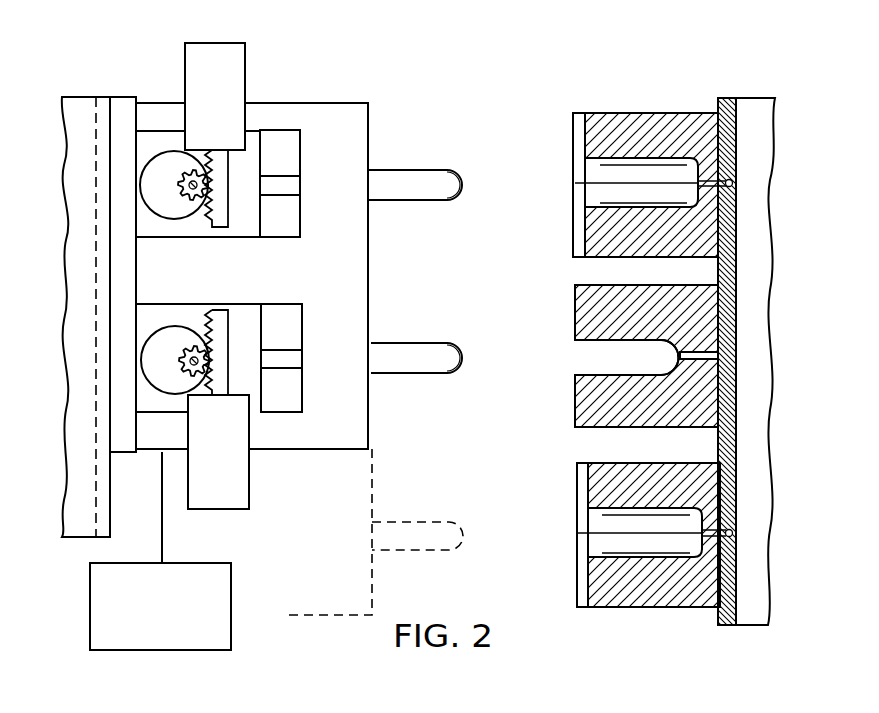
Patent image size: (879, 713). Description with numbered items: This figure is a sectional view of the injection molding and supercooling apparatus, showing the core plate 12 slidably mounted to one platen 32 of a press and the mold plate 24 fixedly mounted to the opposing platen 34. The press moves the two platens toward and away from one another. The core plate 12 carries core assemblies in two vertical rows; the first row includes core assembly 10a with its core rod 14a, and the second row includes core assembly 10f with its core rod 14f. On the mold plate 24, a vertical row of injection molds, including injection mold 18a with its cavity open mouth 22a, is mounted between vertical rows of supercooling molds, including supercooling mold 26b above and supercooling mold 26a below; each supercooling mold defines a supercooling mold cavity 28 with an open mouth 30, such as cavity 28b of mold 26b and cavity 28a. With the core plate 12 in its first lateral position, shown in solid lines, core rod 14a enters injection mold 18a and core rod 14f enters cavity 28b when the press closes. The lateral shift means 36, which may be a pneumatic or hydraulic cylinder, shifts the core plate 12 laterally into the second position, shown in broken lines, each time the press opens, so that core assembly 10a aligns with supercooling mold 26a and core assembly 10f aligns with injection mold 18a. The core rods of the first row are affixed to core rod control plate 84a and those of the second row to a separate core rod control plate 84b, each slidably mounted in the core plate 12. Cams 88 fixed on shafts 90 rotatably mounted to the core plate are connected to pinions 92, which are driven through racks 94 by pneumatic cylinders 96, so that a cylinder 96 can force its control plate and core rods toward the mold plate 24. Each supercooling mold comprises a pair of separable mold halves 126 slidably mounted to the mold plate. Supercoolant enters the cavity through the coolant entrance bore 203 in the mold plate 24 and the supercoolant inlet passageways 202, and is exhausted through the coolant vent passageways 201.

The platen 32 is at (80, 105).
The core plate 12 is at (338, 100).
The pneumatic cylinder 96 is at (201, 52).
The core rod control plate 84b is at (252, 140).
The core rod control plate 84a is at (247, 318).
The cam 88 is at (160, 192).
The pinion 92 is at (190, 173).
The shaft 90 is at (188, 172).
The rack 94 is at (218, 313).
The core assembly 10f is at (385, 168).
The core rod 14f is at (438, 168).
The core assembly 10a is at (382, 342).
The core rod 14a is at (450, 342).
The lateral shift means 36 is at (231, 588).
The mold plate 24 is at (728, 98).
The platen 34 is at (753, 103).
The supercooling mold 26b is at (667, 319).
The separable mold half 126 is at (618, 120).
The coolant vent passageway 201 is at (583, 113).
The supercooling mold cavity 28b is at (663, 172).
The open mouth 30 is at (575, 192).
The coolant entrance bore 203 is at (733, 178).
The supercoolant inlet passageway 202 is at (735, 193).
The injection mold 18a is at (576, 292).
The open mouth 22a is at (576, 352).
The supercooling mold cavity 28a is at (576, 376).
The supercooling mold 26a is at (576, 485).
The supercooling mold cavity 28 is at (592, 522).